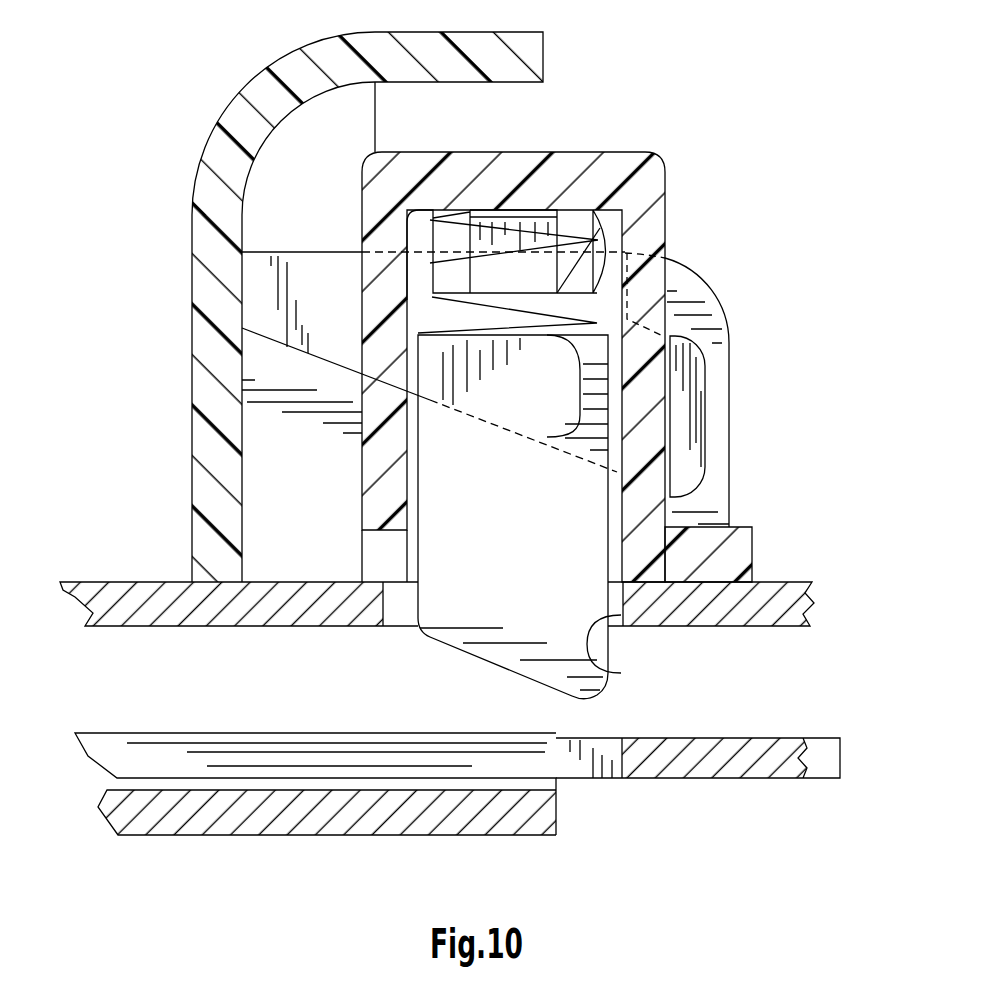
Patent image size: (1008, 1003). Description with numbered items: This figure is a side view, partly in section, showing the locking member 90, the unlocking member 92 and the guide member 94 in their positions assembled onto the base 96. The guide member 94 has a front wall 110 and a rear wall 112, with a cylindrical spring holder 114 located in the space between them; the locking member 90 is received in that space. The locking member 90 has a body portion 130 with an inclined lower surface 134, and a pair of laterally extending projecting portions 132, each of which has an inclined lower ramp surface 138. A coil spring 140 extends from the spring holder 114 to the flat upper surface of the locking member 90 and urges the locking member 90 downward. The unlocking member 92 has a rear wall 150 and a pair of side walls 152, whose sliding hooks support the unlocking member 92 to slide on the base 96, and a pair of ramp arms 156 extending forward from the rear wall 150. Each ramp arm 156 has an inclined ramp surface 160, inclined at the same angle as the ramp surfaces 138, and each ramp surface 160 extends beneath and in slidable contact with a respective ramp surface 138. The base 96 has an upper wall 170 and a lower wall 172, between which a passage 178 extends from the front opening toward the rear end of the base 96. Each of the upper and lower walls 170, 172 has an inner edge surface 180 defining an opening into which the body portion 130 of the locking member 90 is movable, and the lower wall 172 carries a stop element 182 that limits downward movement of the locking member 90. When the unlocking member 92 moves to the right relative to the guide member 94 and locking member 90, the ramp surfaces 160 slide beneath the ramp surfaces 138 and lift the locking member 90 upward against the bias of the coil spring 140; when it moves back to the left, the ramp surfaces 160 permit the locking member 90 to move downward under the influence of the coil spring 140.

The locking member 90 is at (614, 633).
The unlocking member 92 is at (520, 33).
The guide member 94 is at (660, 152).
The base 96 is at (97, 582).
The front wall 110 is at (652, 430).
The rear wall 112 is at (382, 430).
The cylindrical spring holder 114 is at (495, 213).
The body portion 130 is at (457, 607).
The projecting portions 132 is at (533, 440).
The inclined lower surface 134 is at (483, 658).
The inclined lower ramp surface 138 is at (482, 420).
The coil spring 140 is at (603, 215).
The rear wall 150 is at (215, 226).
The side walls 152 is at (360, 127).
The ramp arms 156 is at (714, 299).
The inclined ramp surface 160 is at (285, 330).
The upper wall 170 is at (764, 597).
The lower wall 172 is at (737, 767).
The passage 178 is at (775, 688).
The inner edge surface 180 is at (606, 656).
The stop element 182 is at (432, 818).